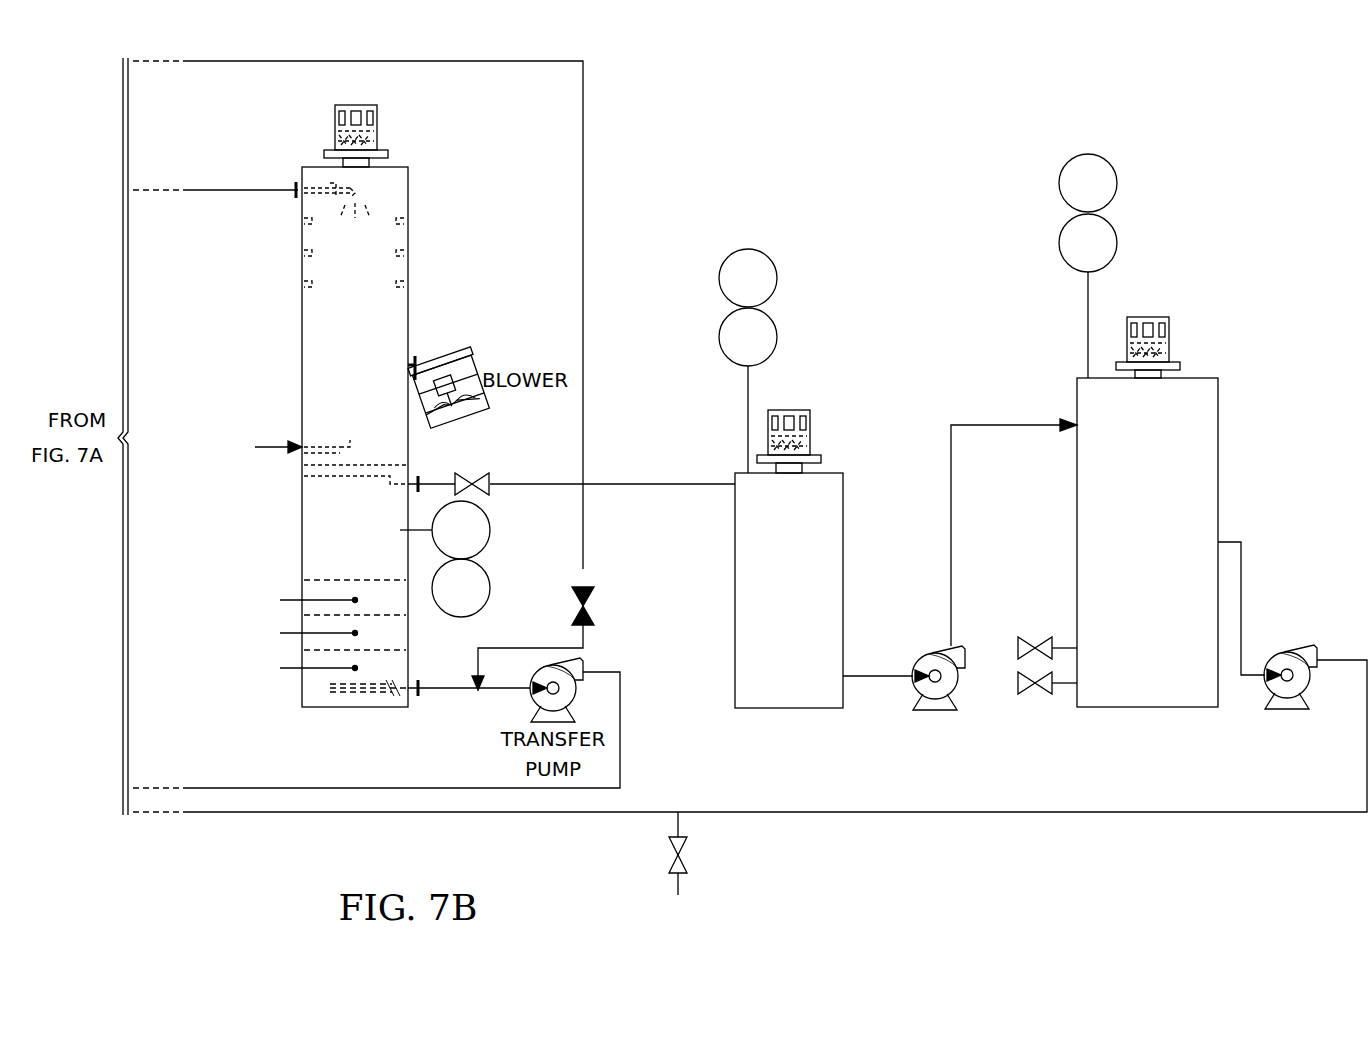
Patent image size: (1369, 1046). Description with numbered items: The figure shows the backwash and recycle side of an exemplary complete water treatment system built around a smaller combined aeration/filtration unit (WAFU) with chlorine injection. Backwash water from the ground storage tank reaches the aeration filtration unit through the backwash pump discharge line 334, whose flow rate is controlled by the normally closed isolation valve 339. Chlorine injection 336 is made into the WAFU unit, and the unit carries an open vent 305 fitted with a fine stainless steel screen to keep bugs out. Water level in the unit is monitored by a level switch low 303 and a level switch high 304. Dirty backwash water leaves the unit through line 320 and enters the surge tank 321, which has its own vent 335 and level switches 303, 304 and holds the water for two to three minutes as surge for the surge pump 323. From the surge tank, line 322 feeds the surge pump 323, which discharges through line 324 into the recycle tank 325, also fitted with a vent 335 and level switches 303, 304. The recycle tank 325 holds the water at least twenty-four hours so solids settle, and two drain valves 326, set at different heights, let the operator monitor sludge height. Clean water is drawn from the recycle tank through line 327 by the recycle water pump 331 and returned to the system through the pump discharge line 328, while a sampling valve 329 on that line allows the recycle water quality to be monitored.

The discharge line 334 is at (425, 61).
The open vent 305 is at (380, 132).
The chlorine injection 336 is at (284, 440).
The line 320 is at (502, 484).
The level switch high (LSH) 304 is at (491, 533).
The level switch low (LSL) 303 is at (491, 590).
The isolation valve 339 is at (572, 614).
The surge tank 321 is at (771, 639).
The vent 335 is at (812, 437).
The line 322 is at (878, 680).
The surge pump 323 is at (942, 652).
The line 324 is at (1013, 424).
The recycle tank 325 is at (1126, 592).
The drain valves 326 is at (1028, 640).
The line 327 is at (1245, 588).
The recycle water pump 331 is at (1292, 652).
The pump discharge line 328 is at (1113, 814).
The sampling valve 329 is at (688, 858).